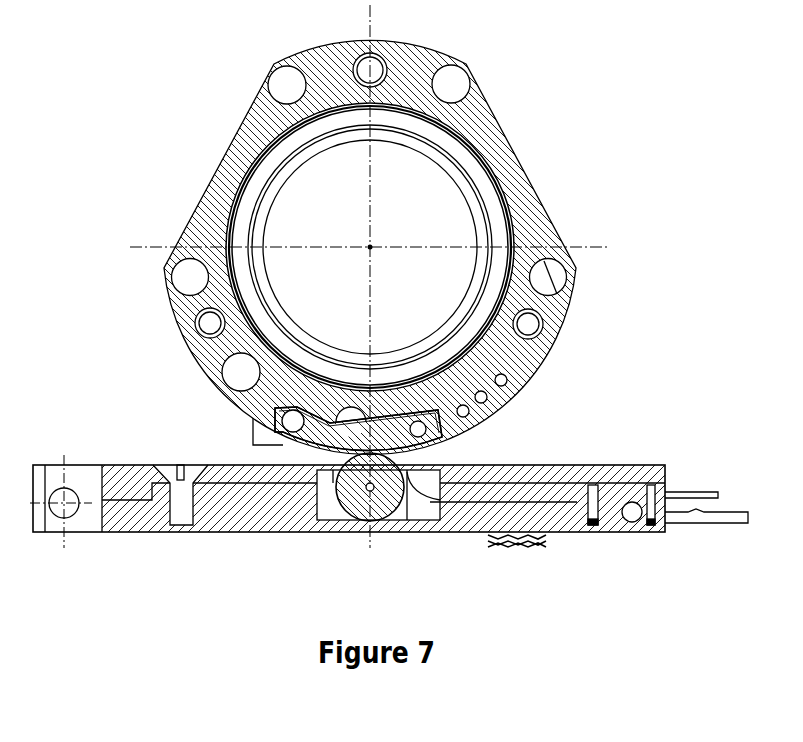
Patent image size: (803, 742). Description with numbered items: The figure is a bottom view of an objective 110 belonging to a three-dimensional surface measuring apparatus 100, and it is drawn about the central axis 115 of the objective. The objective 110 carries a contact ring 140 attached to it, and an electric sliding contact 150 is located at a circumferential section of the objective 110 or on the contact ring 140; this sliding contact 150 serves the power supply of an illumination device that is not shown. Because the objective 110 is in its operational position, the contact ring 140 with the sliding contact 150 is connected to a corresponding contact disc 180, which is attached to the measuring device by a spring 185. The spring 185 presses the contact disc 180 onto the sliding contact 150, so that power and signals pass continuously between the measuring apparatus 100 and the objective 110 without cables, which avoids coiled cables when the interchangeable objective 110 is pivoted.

The 3D surface measuring apparatus 100 is at (144, 112).
The objective 110 is at (518, 179).
The rotation axis 115 is at (372, 245).
The contact ring 140 is at (529, 399).
The sliding contact 150 is at (360, 437).
The contact disc 180 is at (357, 499).
The spring 185 is at (538, 543).